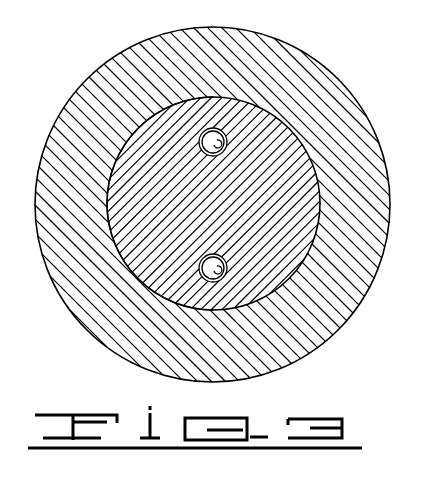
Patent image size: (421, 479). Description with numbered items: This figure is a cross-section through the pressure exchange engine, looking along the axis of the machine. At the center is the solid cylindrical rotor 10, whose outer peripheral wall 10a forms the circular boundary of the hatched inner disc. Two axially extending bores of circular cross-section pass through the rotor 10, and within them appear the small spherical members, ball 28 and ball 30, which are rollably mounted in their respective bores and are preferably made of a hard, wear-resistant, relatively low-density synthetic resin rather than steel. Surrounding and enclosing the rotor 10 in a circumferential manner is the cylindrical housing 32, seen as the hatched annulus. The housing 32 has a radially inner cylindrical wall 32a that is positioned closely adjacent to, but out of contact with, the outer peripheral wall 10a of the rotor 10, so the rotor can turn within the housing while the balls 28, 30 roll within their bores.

The rotor 10 is at (221, 207).
The outer peripheral wall 10a is at (110, 220).
The ball 28 is at (218, 276).
The ball 30 is at (213, 128).
The cylindrical housing 32 is at (253, 57).
The radially inner cylindrical wall 32a is at (118, 271).